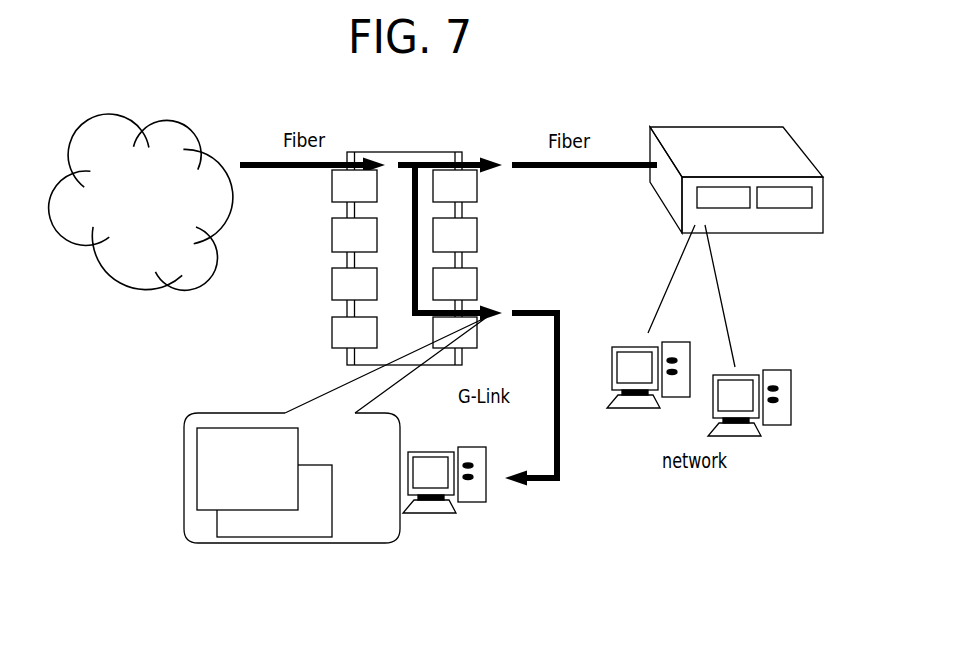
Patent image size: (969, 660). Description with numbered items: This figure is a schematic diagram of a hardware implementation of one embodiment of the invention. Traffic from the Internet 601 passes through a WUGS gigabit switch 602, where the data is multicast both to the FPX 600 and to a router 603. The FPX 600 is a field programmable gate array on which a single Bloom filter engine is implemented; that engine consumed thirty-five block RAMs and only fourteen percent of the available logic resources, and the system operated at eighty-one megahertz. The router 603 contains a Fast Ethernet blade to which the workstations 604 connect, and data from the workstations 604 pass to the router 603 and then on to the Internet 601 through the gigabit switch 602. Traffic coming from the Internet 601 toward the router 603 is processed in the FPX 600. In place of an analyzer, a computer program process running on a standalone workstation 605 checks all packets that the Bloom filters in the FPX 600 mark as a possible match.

The FPGA / FPX 600 is at (223, 477).
The Internet 601 is at (168, 120).
The WUGS-20 gigabit switch 602 is at (435, 152).
The router 603 is at (665, 188).
The workstations 604 is at (640, 363).
The standalone workstation 605 is at (433, 512).